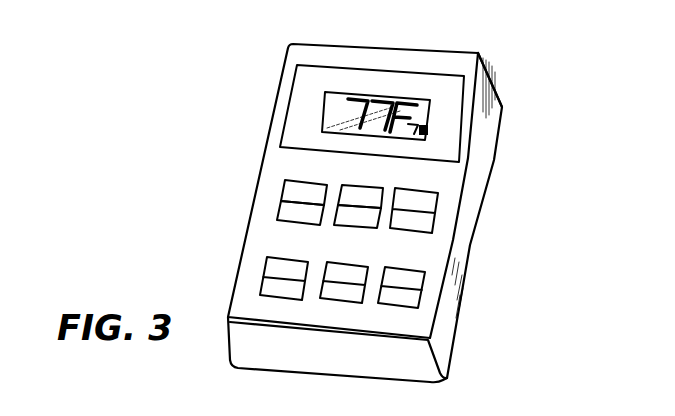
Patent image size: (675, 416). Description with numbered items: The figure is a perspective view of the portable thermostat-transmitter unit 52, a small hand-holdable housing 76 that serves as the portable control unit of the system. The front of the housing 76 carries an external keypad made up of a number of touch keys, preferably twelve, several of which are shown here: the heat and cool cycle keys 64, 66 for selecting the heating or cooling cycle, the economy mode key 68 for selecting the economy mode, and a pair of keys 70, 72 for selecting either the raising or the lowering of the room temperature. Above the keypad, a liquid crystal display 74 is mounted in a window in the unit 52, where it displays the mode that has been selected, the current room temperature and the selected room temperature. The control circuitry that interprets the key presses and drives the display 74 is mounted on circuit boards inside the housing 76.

The portable thermostat-transmitter unit 52 is at (253, 198).
The heat cycle key 64 is at (283, 197).
The cool cycle key 66 is at (278, 219).
The economy mode key 68 is at (422, 203).
The temperature raising key 70 is at (372, 192).
The temperature lowering key 72 is at (368, 222).
The liquid crystal display 74 is at (425, 117).
The housing 76 is at (481, 56).